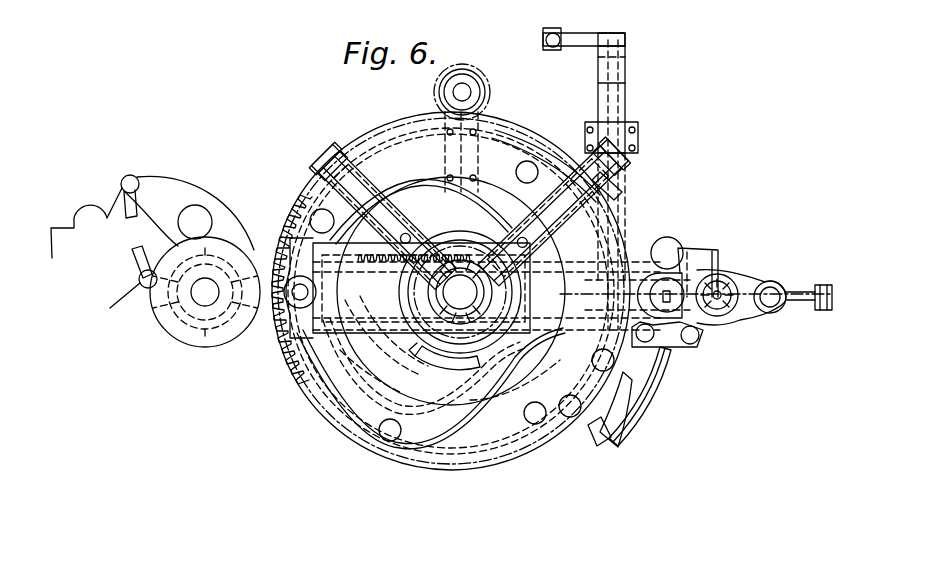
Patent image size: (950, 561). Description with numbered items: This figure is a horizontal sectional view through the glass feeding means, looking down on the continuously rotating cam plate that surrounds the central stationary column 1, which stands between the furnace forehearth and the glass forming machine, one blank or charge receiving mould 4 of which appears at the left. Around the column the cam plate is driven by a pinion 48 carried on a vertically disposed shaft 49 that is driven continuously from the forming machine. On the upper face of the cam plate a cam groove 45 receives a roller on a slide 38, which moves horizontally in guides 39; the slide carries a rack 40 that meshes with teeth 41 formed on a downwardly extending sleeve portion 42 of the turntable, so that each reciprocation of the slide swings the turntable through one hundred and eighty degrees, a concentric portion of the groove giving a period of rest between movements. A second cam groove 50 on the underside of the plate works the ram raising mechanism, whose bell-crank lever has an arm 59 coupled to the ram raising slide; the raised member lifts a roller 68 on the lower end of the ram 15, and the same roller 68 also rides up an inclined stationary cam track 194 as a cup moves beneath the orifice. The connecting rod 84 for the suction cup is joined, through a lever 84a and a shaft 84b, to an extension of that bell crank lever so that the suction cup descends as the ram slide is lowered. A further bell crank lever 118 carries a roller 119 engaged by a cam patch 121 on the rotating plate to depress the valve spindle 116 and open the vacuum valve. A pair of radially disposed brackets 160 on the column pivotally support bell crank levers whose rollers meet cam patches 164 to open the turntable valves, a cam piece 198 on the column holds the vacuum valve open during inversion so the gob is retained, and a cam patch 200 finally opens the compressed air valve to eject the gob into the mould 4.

The central stationary column 1 is at (472, 335).
The blank or charge receiving mould 4 is at (177, 330).
The ram 15 is at (737, 290).
The slide 38 is at (297, 317).
The guides 39 is at (353, 332).
The rack 40 is at (297, 370).
The teeth 41 is at (470, 263).
The sleeve portion 42 is at (460, 322).
The cam groove 45 is at (322, 373).
The pinion 48 is at (488, 86).
The vertically disposed shaft 49 is at (465, 90).
The second cam groove 50 is at (505, 430).
The arm 59 is at (673, 352).
The roller 68 is at (720, 266).
The connecting rod 84 is at (548, 40).
The lever 84a is at (580, 42).
The shaft 84b is at (615, 177).
The valve spindle 116 is at (818, 304).
The bell crank lever 118 is at (680, 258).
The roller 119 is at (673, 255).
The cam patch 121 is at (593, 440).
The radially disposed brackets 160 is at (355, 153).
The cam patches 164 is at (548, 133).
The stationary cam track 194 is at (643, 410).
The cam piece 198 is at (425, 348).
The cam patch 200 is at (283, 250).